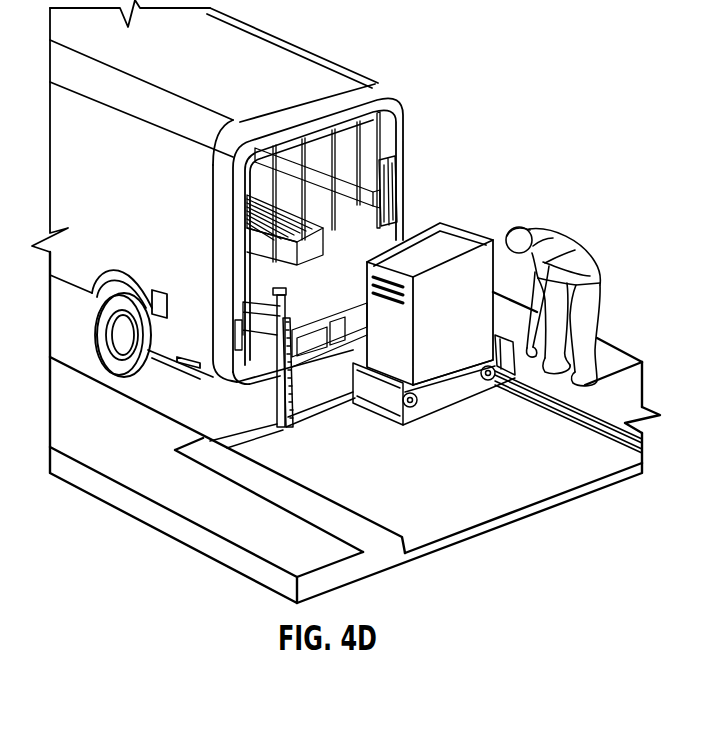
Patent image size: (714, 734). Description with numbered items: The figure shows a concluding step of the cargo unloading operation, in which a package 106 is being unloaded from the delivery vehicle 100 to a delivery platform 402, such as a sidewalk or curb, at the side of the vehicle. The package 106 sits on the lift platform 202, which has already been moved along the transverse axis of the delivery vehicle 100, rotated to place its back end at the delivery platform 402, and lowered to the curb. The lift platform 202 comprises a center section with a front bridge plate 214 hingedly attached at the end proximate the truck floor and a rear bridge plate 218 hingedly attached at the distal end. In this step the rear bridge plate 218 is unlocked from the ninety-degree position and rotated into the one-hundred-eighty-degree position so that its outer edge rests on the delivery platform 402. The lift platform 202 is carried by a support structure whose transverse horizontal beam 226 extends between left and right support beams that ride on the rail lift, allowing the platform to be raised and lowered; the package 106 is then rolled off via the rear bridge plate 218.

The delivery vehicle 100 is at (370, 80).
The package 106 is at (462, 225).
The lift platform 202 is at (458, 398).
The front bridge plate 214 is at (385, 410).
The rear bridge plate 218 is at (512, 396).
The transverse horizontal beam 226 is at (296, 430).
The delivery platform 402 is at (604, 406).